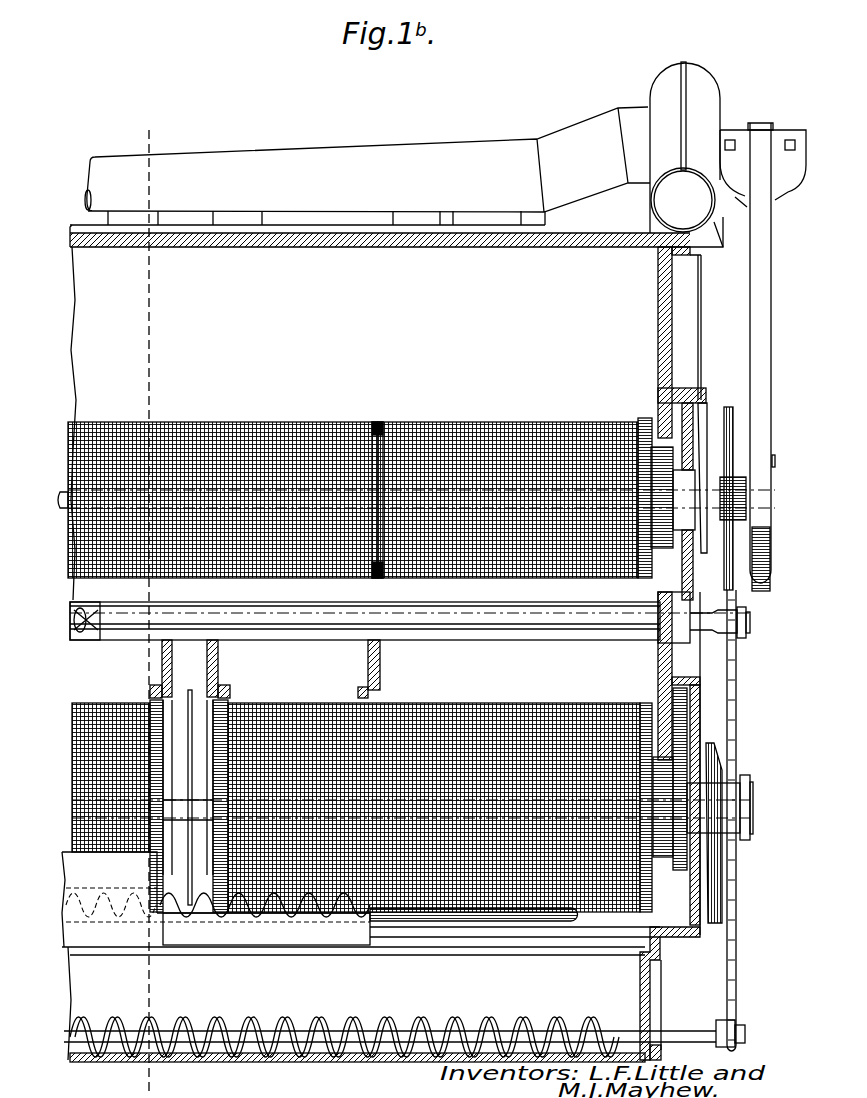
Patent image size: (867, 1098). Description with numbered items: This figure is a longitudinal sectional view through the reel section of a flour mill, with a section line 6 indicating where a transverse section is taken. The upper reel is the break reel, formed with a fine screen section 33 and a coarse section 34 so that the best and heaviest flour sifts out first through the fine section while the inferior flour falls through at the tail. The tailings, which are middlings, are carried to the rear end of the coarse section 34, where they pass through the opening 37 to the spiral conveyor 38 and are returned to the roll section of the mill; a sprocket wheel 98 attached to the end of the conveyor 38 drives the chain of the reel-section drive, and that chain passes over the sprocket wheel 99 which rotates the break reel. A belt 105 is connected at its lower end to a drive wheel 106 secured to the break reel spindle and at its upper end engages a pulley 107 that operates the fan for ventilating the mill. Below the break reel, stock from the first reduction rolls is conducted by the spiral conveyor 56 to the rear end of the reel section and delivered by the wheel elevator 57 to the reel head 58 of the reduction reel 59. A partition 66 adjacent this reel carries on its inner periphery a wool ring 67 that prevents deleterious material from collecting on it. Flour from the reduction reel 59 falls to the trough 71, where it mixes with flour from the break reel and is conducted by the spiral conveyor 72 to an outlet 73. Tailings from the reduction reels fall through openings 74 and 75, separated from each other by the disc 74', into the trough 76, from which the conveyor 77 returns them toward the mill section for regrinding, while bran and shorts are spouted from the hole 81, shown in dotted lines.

The section line 6- 6 is at (140, 606).
The pulley 107 is at (758, 128).
The belt 105 is at (771, 300).
The drive wheel 106 is at (773, 465).
The sprocket wheel 99 is at (732, 405).
The fine screen section 33 is at (285, 422).
The coarse section 34 is at (525, 422).
The opening 37 is at (672, 582).
The sprocket wheel 98 is at (750, 624).
The spiral conveyor 38 is at (78, 641).
The partition 66 is at (657, 660).
The opening 74 is at (208, 796).
The disc 74' is at (220, 782).
The reduction reel 59 is at (433, 705).
The wool ring 67 is at (660, 757).
The reel head 58 is at (646, 705).
The wheel elevator 57 is at (680, 747).
The spiral conveyor 56 is at (430, 940).
The opening 75 is at (158, 818).
The conveyor 77 is at (108, 925).
The hole 81 is at (197, 947).
The trough 76 is at (282, 940).
The spiral conveyor 72 is at (95, 1056).
The trough 71 is at (226, 1062).
The outlet 73 is at (620, 1053).